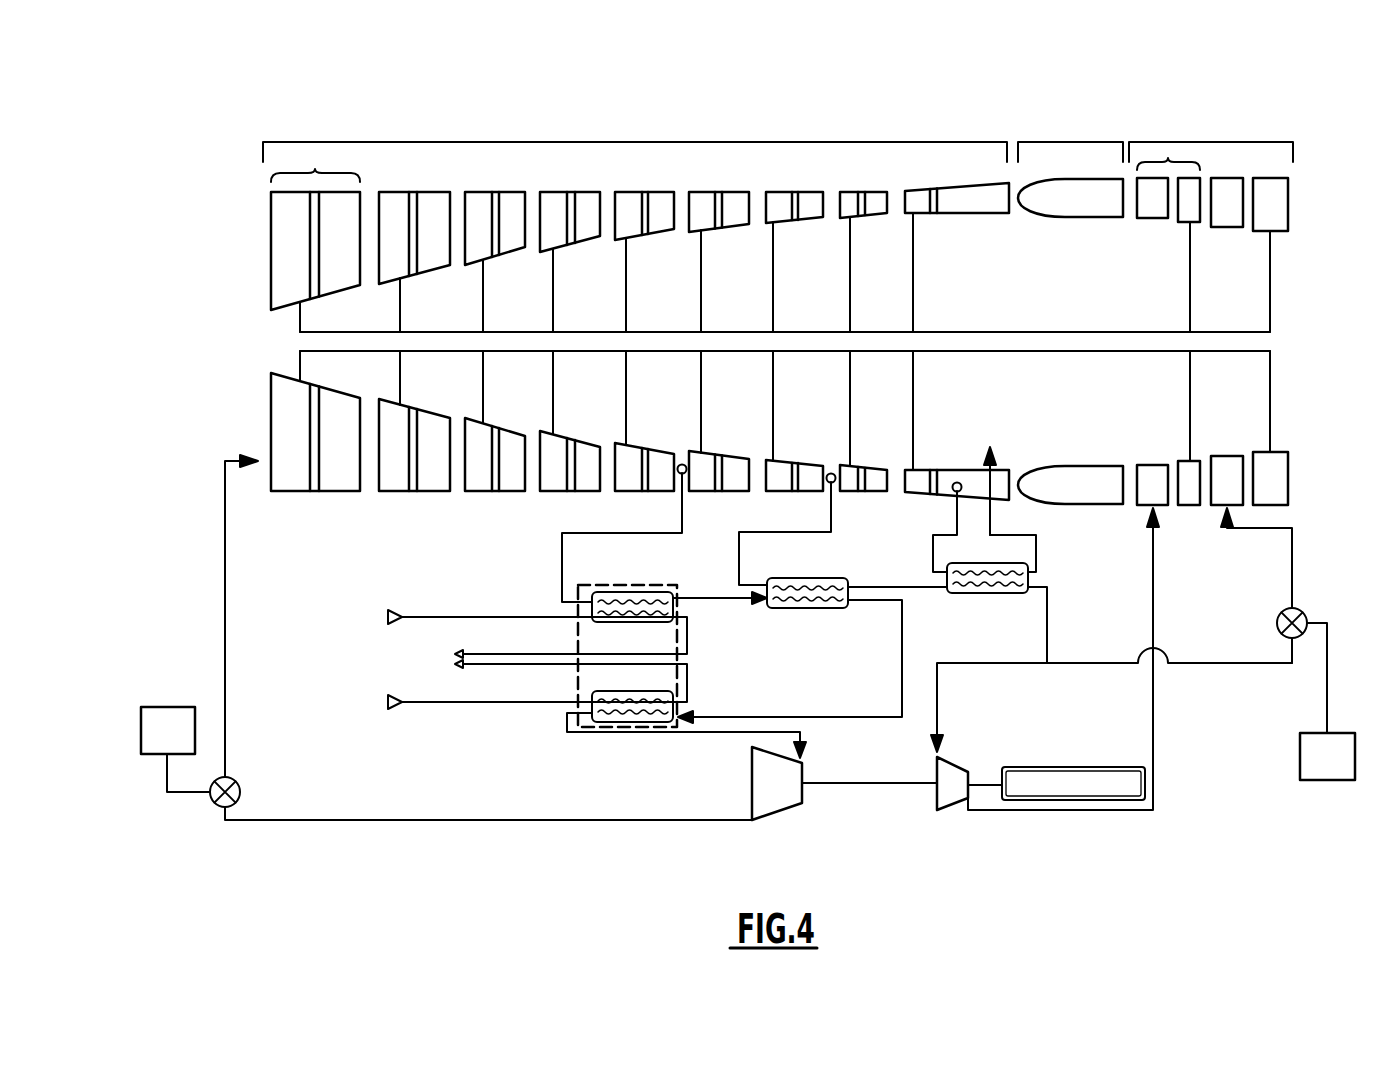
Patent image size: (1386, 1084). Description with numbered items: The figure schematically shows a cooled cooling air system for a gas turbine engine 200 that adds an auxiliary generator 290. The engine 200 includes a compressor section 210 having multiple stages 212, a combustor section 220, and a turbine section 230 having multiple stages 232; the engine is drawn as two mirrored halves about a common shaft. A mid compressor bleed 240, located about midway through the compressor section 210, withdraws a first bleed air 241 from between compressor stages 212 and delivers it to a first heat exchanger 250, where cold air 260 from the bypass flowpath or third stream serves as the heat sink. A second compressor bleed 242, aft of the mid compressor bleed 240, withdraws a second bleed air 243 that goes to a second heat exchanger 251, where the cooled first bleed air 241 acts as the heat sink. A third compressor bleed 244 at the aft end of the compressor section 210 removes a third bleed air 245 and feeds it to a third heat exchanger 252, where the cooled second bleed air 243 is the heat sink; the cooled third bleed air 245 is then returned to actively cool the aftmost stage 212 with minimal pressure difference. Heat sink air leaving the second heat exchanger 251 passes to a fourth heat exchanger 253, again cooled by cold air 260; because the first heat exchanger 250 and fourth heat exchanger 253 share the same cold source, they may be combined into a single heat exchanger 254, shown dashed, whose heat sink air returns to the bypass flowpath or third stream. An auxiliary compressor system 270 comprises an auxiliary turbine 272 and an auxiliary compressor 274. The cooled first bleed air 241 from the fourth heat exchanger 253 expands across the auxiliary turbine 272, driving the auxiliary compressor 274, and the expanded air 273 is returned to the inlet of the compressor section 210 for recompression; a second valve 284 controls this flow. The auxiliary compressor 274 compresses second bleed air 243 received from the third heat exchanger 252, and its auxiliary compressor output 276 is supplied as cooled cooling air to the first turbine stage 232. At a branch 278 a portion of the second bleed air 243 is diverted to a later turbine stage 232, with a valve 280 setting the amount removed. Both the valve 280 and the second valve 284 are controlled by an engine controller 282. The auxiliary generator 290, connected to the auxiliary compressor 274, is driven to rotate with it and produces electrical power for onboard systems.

The gas turbine engine 200 is at (234, 104).
The compressor section 210 is at (636, 292).
The compressor stages 212 is at (315, 169).
The combustor section 220 is at (1072, 142).
The turbine section 230 is at (1223, 294).
The turbine stages 232 is at (1168, 158).
The mid compressor bleed 240 is at (682, 464).
The first bleed air 241 is at (683, 524).
The second compressor bleed 242 is at (831, 473).
The second bleed air 243 is at (832, 524).
The third compressor bleed 244 is at (957, 482).
The third bleed air 245 is at (933, 554).
The first heat exchanger 250 is at (632, 586).
The second heat exchanger 251 is at (786, 578).
The third heat exchanger 252 is at (975, 594).
The fourth heat exchanger 253 is at (617, 727).
The single heat exchanger 254 is at (678, 642).
The cold air 260 is at (447, 617).
The auxiliary compressor system 270 is at (948, 797).
The auxiliary turbine 272 is at (777, 792).
The expanded air 273 is at (532, 822).
The auxiliary compressor 274 is at (950, 785).
The auxiliary compressor output 276 is at (1154, 700).
The branch 278 is at (1047, 668).
The valve 280 is at (1303, 612).
The engine controller 282 is at (1313, 737).
The second valve 284 is at (236, 780).
The auxiliary generator 290 is at (1085, 767).